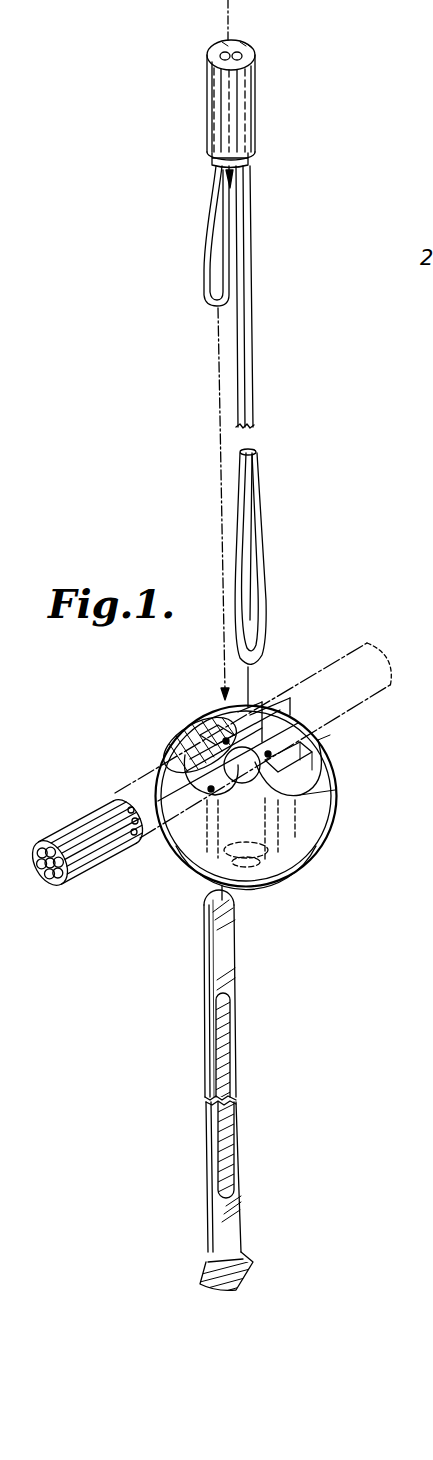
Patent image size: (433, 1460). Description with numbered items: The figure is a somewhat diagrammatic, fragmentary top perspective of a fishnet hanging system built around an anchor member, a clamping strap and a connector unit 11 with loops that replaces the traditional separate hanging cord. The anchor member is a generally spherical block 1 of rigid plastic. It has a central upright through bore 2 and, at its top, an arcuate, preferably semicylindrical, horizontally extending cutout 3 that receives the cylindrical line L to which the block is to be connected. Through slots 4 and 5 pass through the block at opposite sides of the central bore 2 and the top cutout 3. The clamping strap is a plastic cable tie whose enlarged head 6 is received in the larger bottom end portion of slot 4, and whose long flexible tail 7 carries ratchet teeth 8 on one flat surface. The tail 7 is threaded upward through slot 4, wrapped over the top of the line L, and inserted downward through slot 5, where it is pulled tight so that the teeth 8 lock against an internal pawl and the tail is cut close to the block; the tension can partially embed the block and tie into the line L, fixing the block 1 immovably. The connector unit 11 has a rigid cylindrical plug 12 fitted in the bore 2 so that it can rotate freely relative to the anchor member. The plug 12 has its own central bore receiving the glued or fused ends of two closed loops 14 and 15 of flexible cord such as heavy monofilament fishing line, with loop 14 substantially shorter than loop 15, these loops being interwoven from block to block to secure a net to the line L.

The anchor block 1 is at (340, 787).
The central upright through bore 2 is at (190, 745).
The top cutout 3 is at (275, 706).
The through slot 4 is at (226, 718).
The through slot 5 is at (336, 810).
The enlarged head 6 is at (238, 1276).
The tail 7 is at (222, 949).
The ratchet teeth 8 is at (226, 1062).
The connector unit 11 is at (212, 162).
The plug 12 is at (252, 97).
The loop 14 is at (205, 278).
The loop 15 is at (251, 418).
The line L is at (77, 822).